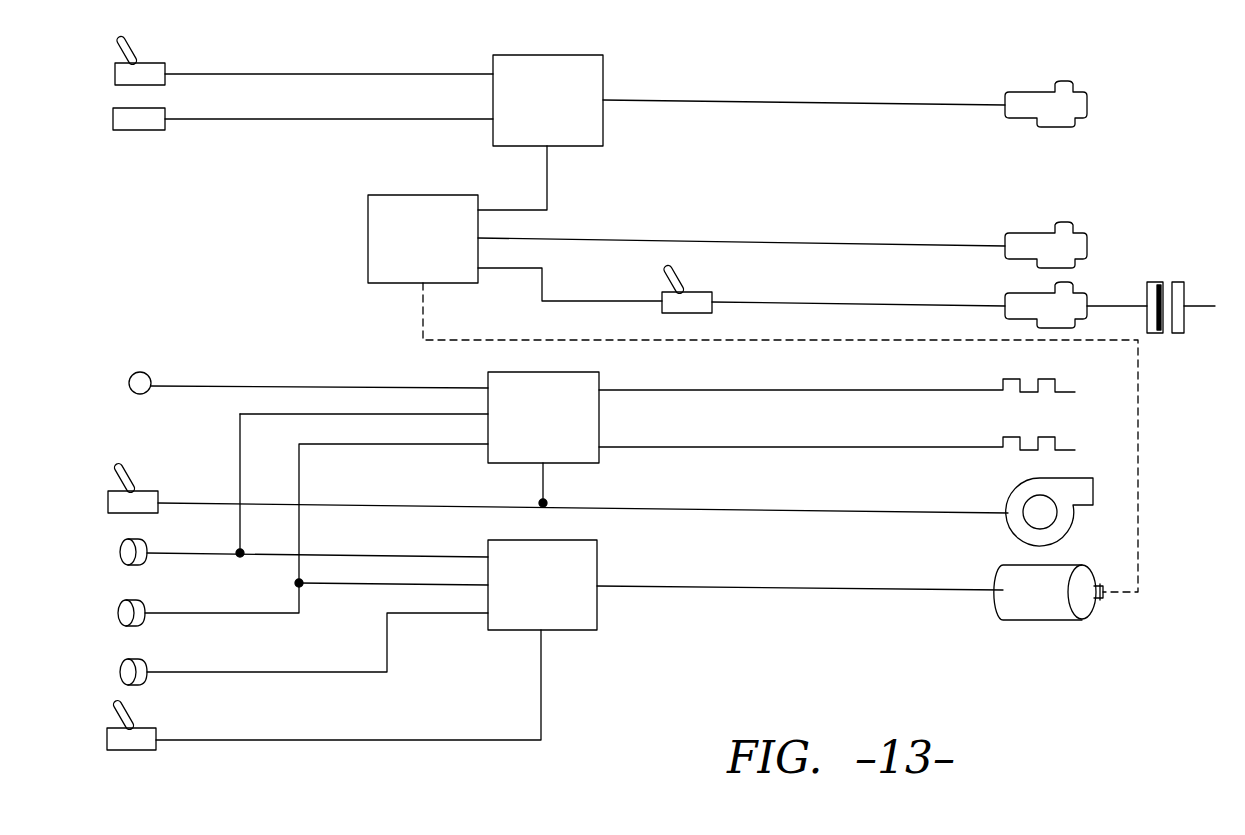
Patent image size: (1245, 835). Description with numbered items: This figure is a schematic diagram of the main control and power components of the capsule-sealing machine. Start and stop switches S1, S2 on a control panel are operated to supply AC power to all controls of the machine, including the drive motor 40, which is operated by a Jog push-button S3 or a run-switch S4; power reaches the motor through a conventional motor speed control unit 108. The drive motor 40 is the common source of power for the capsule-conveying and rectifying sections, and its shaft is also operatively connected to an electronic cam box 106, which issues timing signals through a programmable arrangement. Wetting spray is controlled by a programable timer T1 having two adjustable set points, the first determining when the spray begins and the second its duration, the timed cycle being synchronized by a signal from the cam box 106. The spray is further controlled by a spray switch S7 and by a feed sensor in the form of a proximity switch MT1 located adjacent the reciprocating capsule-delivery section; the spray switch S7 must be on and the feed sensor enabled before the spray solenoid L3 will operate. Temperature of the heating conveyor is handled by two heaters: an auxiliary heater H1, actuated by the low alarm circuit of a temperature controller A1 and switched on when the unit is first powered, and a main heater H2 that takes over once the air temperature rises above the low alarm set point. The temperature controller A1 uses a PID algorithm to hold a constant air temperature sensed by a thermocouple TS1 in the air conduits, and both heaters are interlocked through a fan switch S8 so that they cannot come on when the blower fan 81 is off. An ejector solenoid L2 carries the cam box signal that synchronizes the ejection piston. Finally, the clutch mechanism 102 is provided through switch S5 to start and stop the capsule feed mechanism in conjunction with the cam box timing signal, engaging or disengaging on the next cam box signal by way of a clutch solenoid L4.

The spray switch S7 is at (115, 72).
The proximity switch MT1 is at (113, 118).
The programable timer T1 is at (559, 55).
The electronic cam box 106 is at (430, 195).
The spray solenoid L3 is at (1034, 92).
The ejector solenoid L2 is at (1037, 233).
The clutch solenoid L4 is at (1028, 293).
The switch S5 is at (712, 292).
The clutch mechanism 102 is at (1178, 282).
The thermocouple TS1 is at (141, 372).
The temperature controller A1 is at (516, 372).
The auxiliary heater H1 is at (1012, 379).
The main heater H2 is at (1012, 437).
The fan switch S8 is at (108, 500).
The blower fan 81 is at (1025, 490).
The start switch S1 is at (120, 552).
The stop switch S2 is at (118, 612).
The Jog push-button S3 is at (120, 671).
The run-switch S4 is at (107, 738).
The motor speed control unit 108 is at (577, 630).
The drive motor 40 is at (1012, 565).